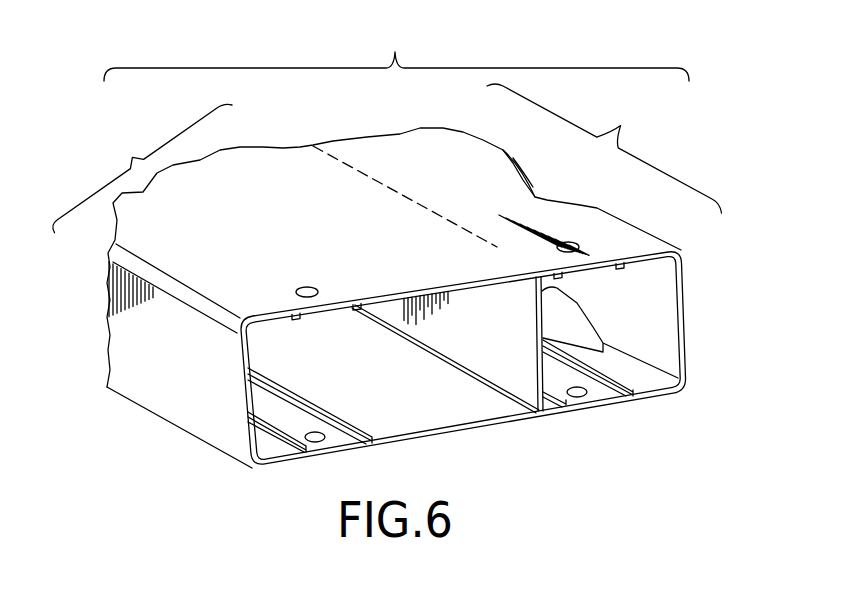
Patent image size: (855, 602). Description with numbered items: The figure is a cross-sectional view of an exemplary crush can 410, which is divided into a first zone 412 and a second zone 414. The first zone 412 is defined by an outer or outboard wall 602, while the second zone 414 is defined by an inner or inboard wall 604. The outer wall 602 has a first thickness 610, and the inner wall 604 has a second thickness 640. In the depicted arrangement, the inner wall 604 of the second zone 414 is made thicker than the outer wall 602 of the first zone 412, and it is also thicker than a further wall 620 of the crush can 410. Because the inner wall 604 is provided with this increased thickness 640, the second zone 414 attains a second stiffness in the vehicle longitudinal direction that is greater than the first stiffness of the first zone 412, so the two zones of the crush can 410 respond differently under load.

The crush can 410 is at (396, 47).
The first zone 412 is at (142, 168).
The second zone 414 is at (604, 148).
The outer wall 602 is at (230, 372).
The inner wall 604 is at (648, 321).
The first thickness 610 is at (381, 300).
The wall 620 is at (537, 316).
The second thickness 640 is at (683, 322).